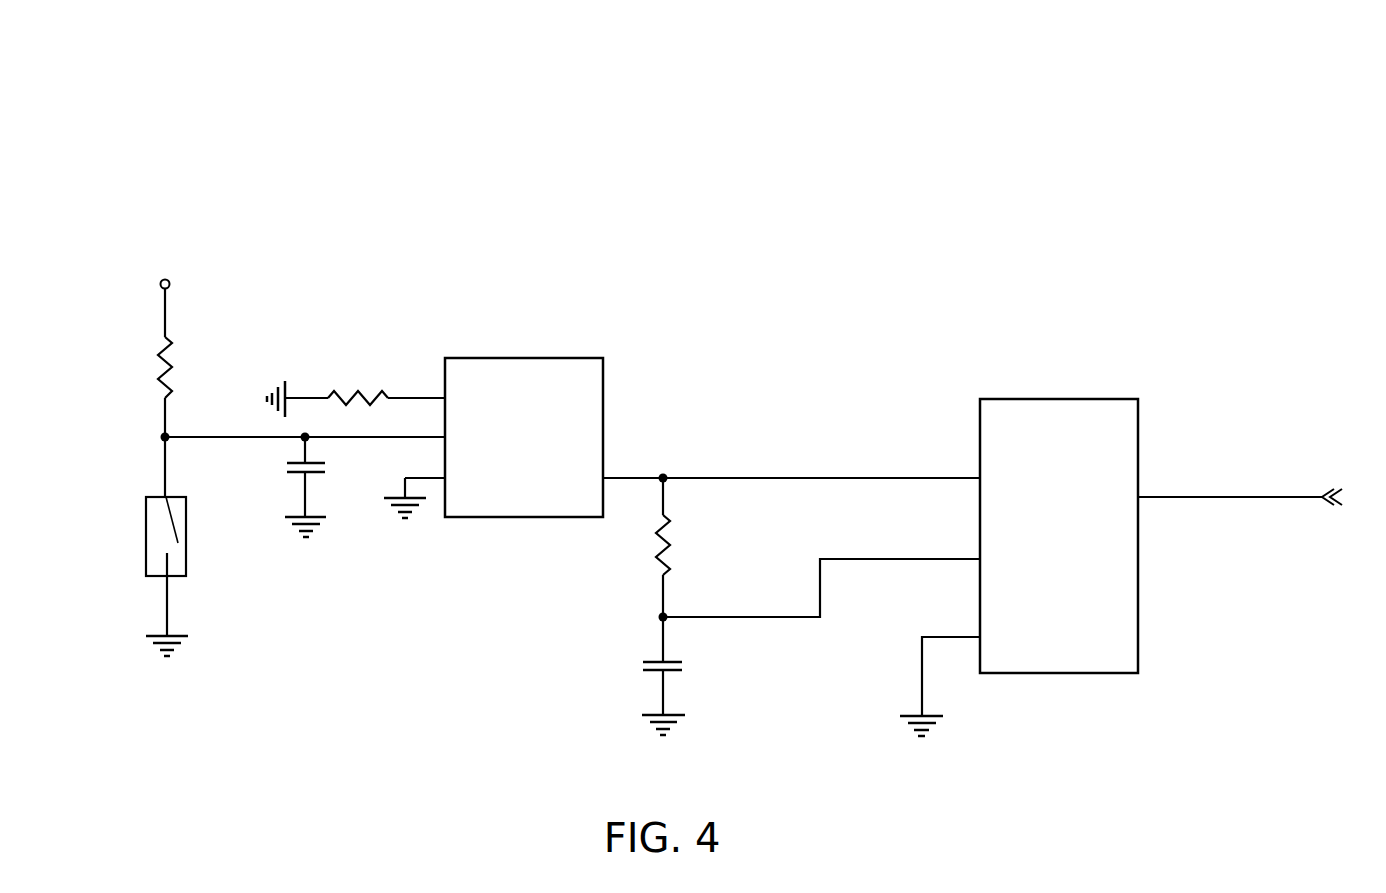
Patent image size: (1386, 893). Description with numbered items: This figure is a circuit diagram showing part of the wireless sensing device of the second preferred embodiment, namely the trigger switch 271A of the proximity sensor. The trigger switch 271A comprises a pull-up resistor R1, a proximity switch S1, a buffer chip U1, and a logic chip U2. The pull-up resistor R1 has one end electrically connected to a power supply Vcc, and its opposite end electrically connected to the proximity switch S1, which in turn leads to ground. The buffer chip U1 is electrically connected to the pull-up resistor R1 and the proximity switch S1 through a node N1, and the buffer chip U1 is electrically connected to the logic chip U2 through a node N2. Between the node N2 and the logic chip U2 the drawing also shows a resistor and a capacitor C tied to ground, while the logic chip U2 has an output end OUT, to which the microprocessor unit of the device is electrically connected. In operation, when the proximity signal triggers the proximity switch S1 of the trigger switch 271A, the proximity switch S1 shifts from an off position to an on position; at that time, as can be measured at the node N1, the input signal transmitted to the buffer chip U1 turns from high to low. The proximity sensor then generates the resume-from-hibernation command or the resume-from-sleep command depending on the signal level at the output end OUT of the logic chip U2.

The trigger switch 271A is at (135, 130).
The power supply Vcc is at (165, 292).
The pull-up resistor R1 is at (147, 387).
The node N1 is at (303, 425).
The proximity switch S1 is at (148, 546).
The buffer chip U1 is at (493, 425).
The node N2 is at (791, 463).
The capacitor C is at (671, 698).
The logic chip U2 is at (1019, 554).
The output end OUT is at (1240, 480).